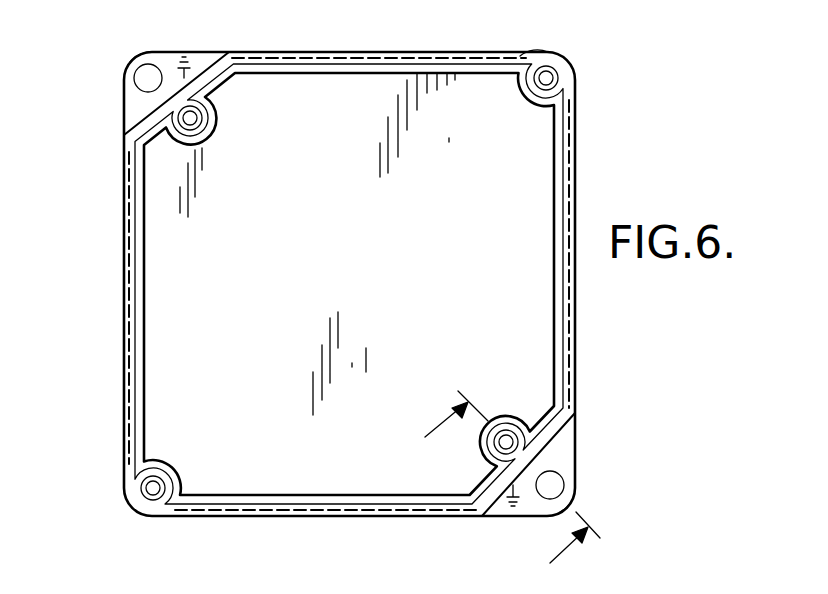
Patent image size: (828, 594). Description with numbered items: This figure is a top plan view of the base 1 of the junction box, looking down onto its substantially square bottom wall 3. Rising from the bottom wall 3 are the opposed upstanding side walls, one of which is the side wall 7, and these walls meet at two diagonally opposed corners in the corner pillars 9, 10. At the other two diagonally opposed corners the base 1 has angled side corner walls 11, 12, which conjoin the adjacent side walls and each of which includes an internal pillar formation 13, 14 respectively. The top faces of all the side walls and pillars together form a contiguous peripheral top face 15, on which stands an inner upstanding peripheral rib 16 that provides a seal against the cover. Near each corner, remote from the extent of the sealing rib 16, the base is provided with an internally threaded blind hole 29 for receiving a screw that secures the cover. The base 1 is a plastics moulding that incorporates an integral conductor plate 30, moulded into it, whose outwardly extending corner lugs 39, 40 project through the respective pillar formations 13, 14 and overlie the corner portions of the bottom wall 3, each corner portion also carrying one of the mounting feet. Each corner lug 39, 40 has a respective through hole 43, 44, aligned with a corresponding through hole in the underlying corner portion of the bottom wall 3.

The base 1 is at (514, 205).
The bottom wall 3 is at (355, 290).
The side wall 7 is at (501, 490).
The corner pillar 9 is at (522, 92).
The corner pillar 10 is at (163, 479).
The angled side corner wall 11 is at (547, 455).
The angled side corner wall 12 is at (212, 56).
The internal pillar formation 13 is at (492, 447).
The internal pillar formation 14 is at (204, 143).
The peripheral top face 15 is at (532, 62).
The inner upstanding peripheral rib 16 is at (124, 135).
The internally threaded blind hole 29 is at (178, 119).
The integral conductor plate 30 is at (486, 517).
The corner lug 39 is at (556, 487).
The corner lug 40 is at (150, 57).
The through hole 43 is at (576, 504).
The through hole 44 is at (134, 78).